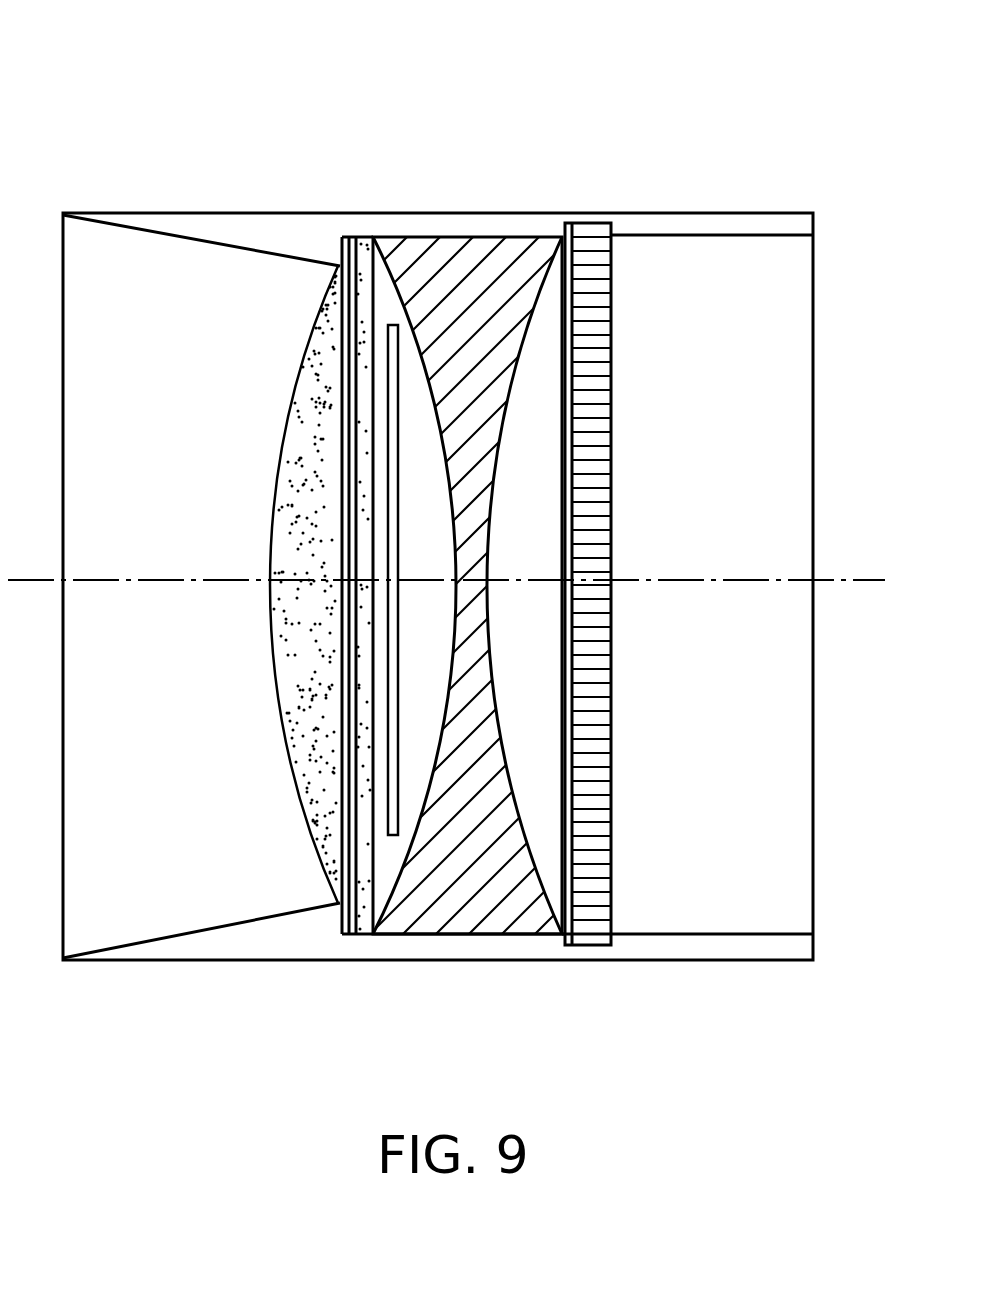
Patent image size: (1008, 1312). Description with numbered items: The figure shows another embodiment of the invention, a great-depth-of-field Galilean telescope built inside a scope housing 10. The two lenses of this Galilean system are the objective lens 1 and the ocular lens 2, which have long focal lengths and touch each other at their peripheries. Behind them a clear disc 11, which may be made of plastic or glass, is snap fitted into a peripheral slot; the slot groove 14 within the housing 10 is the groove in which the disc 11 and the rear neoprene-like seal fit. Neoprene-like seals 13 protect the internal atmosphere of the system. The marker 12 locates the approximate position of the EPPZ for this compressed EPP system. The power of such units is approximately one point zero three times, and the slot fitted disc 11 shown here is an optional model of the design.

The scope housing 10 is at (210, 212).
The objective lens 1 is at (360, 237).
The ocular lens 2 is at (522, 237).
The clear disc 11 is at (590, 223).
The EPPZ position 12 is at (391, 320).
The neoprene-like seals 13 is at (567, 945).
The slot groove 14 is at (615, 228).